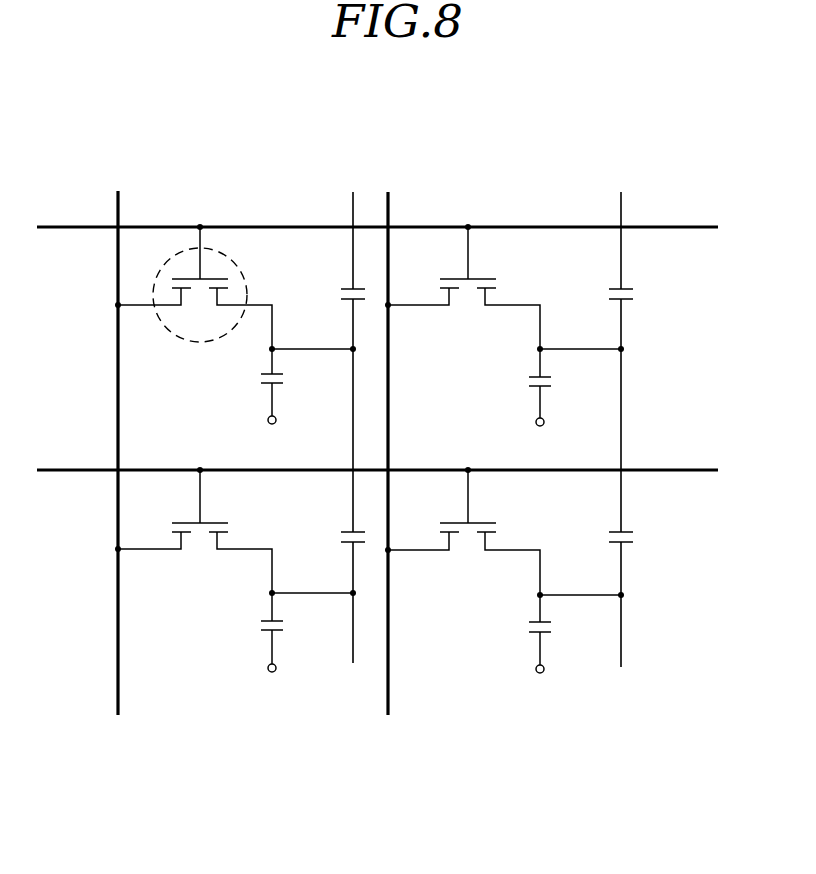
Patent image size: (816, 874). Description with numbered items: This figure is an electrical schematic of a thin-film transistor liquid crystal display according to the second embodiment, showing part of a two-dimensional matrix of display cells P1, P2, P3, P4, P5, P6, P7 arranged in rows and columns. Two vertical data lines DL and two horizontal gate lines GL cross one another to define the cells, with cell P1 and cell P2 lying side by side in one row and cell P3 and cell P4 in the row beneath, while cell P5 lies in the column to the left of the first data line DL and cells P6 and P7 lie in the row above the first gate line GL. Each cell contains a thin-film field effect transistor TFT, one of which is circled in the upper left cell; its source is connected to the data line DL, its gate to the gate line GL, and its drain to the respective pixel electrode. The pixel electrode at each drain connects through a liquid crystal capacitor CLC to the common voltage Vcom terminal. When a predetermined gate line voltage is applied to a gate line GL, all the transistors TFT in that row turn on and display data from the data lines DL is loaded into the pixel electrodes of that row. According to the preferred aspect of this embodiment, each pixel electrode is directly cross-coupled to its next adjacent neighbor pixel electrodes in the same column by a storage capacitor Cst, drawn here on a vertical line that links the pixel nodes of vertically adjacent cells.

The liquid crystal display cell P1 is at (212, 447).
The liquid crystal display cell P2 is at (447, 447).
The liquid crystal display cell P3 is at (212, 703).
The liquid crystal display cell P4 is at (447, 703).
The liquid crystal display cell P5 is at (79, 447).
The liquid crystal display cell P6 is at (212, 184).
The liquid crystal display cell P7 is at (527, 186).
The data line DL is at (116, 209).
The gate line GL is at (716, 227).
The thin-film field effect transistor TFT is at (183, 341).
The storage capacitor Cst is at (460, 429).
The liquid crystal capacitor CLC is at (379, 507).
The common voltage Vcom is at (406, 557).